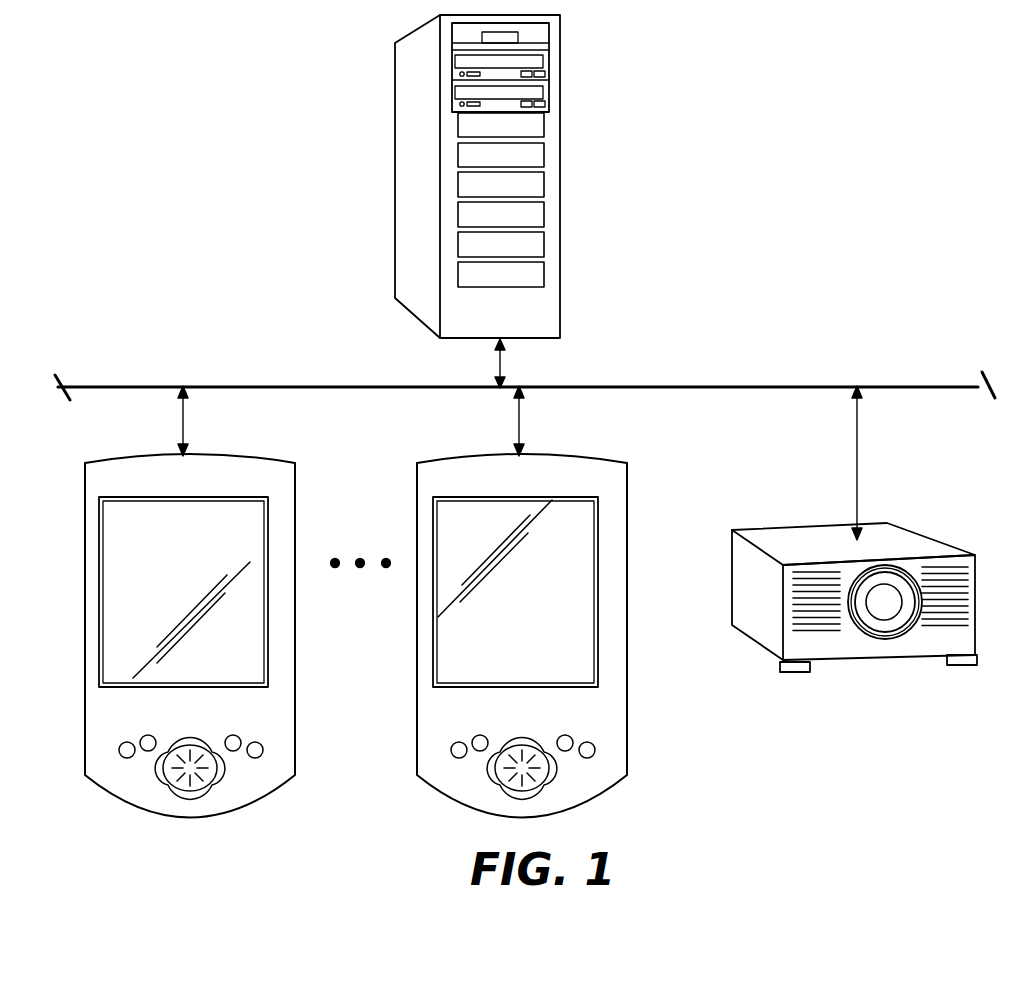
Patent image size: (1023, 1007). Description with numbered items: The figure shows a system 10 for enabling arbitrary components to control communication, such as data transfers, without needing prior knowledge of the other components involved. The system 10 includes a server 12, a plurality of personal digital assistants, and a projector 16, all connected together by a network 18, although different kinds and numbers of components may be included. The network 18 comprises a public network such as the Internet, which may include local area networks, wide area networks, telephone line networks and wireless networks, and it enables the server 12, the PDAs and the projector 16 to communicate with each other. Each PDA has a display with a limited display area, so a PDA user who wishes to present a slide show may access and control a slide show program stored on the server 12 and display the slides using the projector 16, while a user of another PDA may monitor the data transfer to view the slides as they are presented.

The system 10 is at (898, 63).
The server 12 is at (397, 210).
The projector 16 is at (878, 652).
The network 18 is at (645, 387).